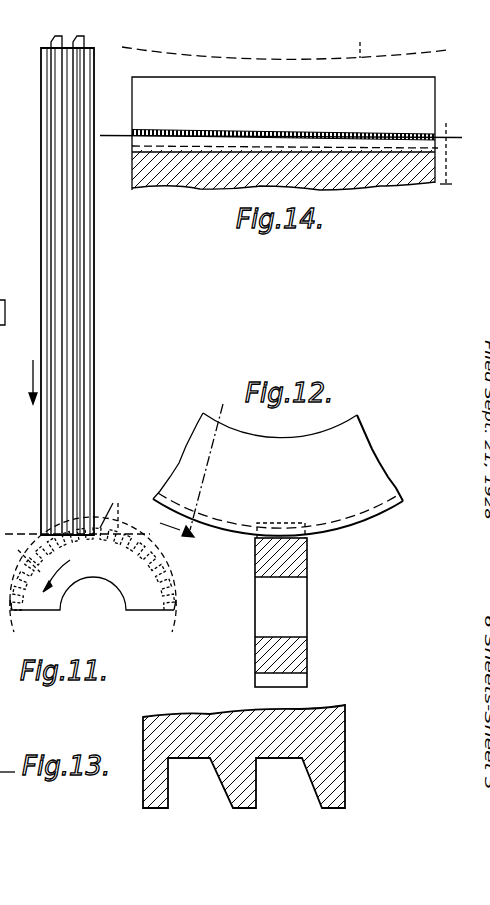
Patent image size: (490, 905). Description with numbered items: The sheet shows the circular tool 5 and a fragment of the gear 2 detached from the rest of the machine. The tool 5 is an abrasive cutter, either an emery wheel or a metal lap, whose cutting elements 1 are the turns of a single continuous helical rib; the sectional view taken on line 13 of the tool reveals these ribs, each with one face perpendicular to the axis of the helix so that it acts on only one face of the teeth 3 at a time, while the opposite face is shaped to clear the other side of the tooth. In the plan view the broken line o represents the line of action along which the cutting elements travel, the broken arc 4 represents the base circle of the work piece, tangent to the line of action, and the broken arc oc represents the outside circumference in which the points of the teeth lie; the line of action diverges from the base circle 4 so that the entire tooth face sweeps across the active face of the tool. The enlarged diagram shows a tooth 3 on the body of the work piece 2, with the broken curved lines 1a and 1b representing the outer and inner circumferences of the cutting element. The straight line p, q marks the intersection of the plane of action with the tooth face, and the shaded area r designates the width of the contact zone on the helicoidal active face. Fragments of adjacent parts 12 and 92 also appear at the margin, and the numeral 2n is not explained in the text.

In FIG. 13, the cutting elements 1 is at (358, 784).
In FIG. 11, the cutting elements 1 is at (84, 349).
In FIG. 14, the gear 2 is at (390, 170).
In FIG. 12, the gear 2 is at (300, 553).
In FIG. 11, the gear 2 is at (147, 598).
In FIG. 11, the teeth of wheel 2n is at (96, 540).
In FIG. 14, the teeth 3 is at (410, 93).
In FIG. 11, the teeth 3 is at (112, 505).
In FIG. 11, the base circle 4 is at (22, 555).
In FIG. 12, the circular tool 5 is at (326, 447).
In FIG. 13, the circular tool 5 is at (184, 730).
In FIG. 11, the circular tool 5 is at (83, 282).
In FIG. 11, the guide member 12 is at (3, 300).
In FIG. 12, the section line 13 is at (240, 410).
In FIG. 11, the section line 13 is at (161, 521).
In FIG. 11, the frame member 92 is at (10, 129).
In FIG. 11, the line of action o is at (13, 532).
In FIG. 11, the outside circumference oc is at (163, 573).
In FIG. 14, the end of intersection line of plane of action p is at (115, 134).
In FIG. 14, the end of intersection line of plane of action q is at (447, 144).
In FIG. 14, the contact zone r is at (230, 133).
In FIG. 14, the outer circumference of cutting element 1a is at (443, 192).
In FIG. 14, the inner circumference of cutting element 1b is at (359, 42).